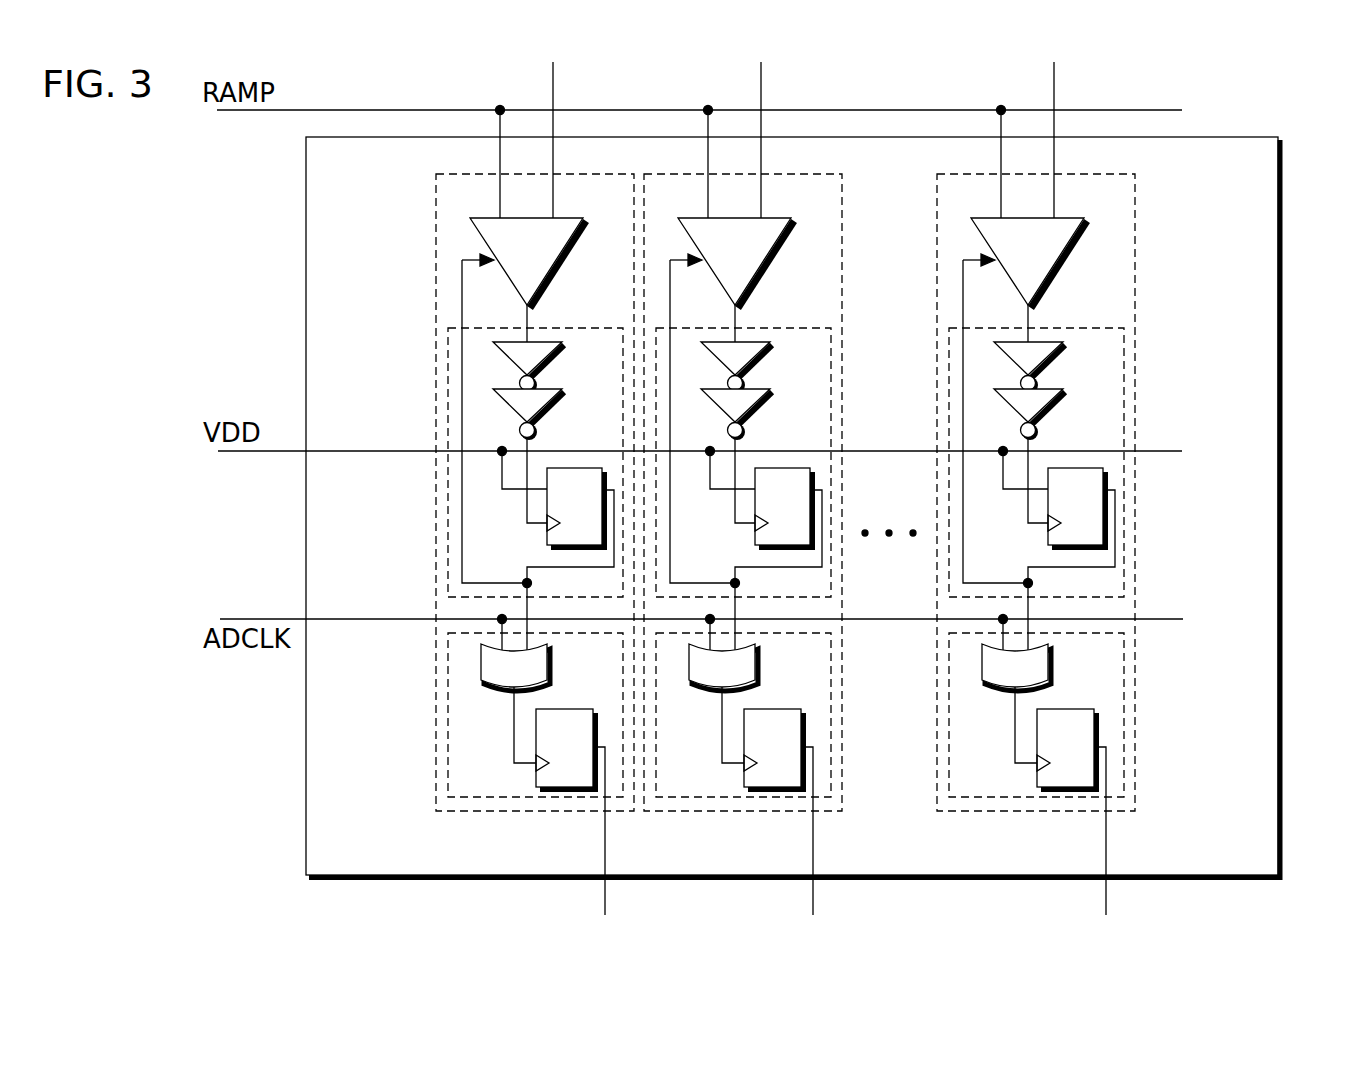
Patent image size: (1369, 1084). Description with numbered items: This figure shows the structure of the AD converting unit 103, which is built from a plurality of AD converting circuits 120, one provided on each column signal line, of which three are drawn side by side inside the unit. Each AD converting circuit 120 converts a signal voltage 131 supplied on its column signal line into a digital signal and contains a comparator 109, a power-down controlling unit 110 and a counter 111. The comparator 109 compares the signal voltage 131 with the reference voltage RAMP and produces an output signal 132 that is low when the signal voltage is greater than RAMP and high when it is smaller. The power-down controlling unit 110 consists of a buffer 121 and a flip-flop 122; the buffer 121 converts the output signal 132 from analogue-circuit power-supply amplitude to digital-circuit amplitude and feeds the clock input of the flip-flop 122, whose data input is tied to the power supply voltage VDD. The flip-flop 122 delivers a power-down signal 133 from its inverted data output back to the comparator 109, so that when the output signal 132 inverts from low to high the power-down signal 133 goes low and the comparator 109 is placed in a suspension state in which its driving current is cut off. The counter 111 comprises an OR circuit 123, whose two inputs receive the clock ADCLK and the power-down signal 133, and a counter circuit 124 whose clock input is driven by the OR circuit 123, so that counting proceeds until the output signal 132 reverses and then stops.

The AD converting unit 103 is at (1282, 232).
The AD converting circuit 120 is at (1137, 197).
The comparator 109 is at (1072, 245).
The signal voltage 131 is at (1054, 82).
The output signal 132 is at (1028, 320).
The power-down signal 133 is at (963, 292).
The power-down controlling unit 110 is at (1108, 328).
The buffer 121 is at (1047, 389).
The flip-flop 122 is at (1047, 540).
The counter 111 is at (1137, 678).
The OR circuit 123 is at (997, 690).
The counter circuit 124 is at (1060, 709).